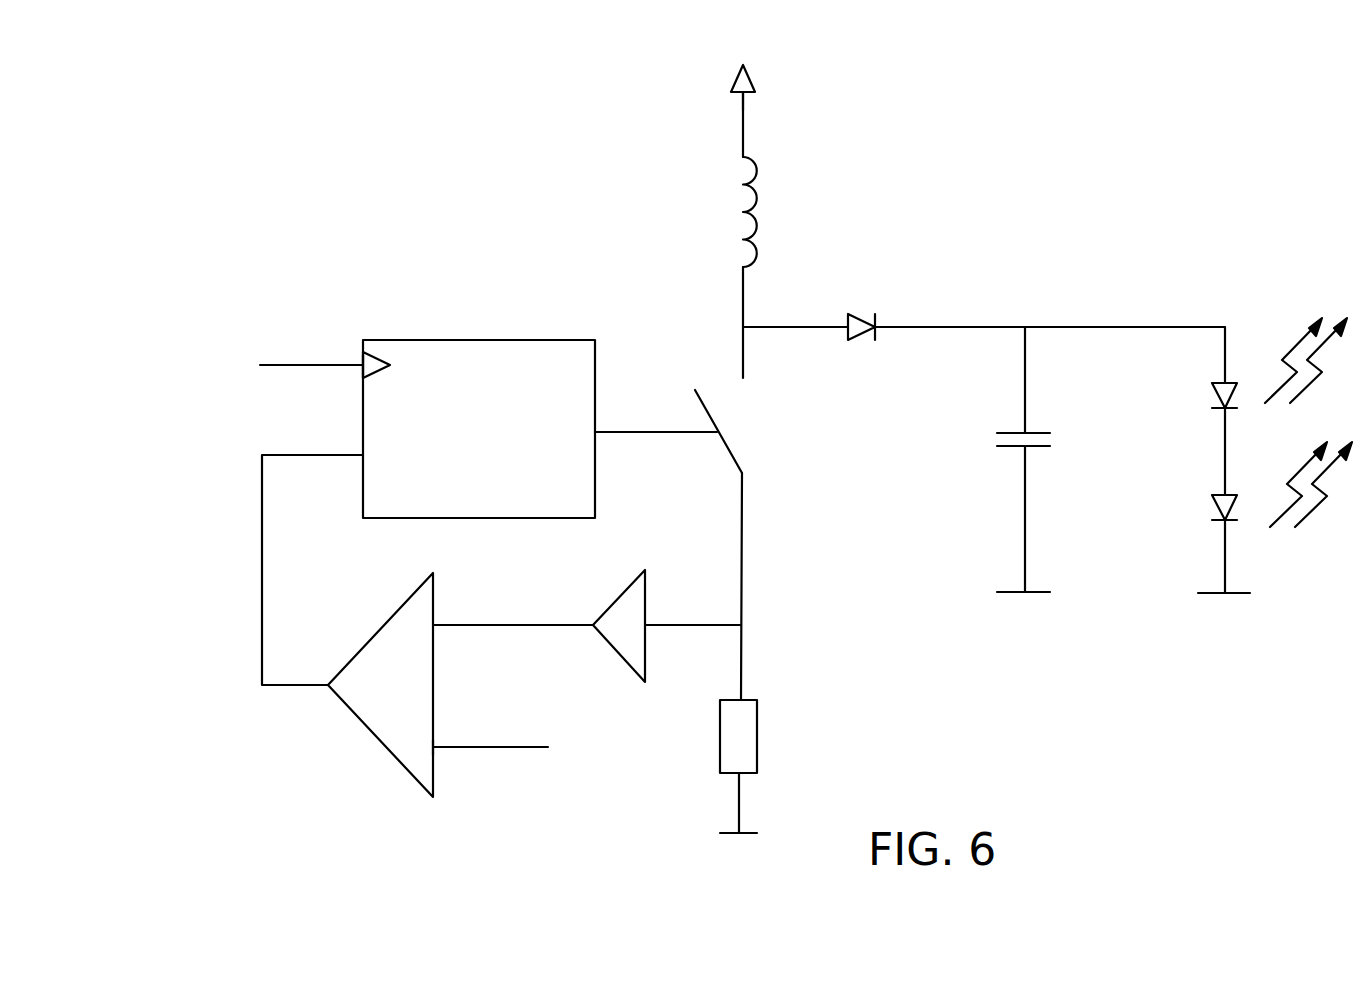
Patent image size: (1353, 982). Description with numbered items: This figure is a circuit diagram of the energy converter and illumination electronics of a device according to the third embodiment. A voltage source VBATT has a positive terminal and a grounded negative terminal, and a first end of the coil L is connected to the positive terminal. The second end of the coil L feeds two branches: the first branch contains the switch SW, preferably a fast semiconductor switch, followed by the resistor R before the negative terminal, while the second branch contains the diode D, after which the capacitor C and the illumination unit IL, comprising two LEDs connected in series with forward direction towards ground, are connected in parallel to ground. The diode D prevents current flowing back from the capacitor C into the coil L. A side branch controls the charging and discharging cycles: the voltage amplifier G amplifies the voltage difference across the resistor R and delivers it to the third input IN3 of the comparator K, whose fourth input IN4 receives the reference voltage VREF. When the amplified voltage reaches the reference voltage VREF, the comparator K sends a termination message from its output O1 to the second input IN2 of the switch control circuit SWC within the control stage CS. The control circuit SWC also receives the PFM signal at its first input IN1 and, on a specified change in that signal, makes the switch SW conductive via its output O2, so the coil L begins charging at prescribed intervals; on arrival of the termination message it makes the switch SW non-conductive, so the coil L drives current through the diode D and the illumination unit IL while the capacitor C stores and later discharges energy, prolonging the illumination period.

The control stage CS is at (479, 429).
The pulse frequency modulated signal PFM is at (276, 366).
The first input IN1 is at (363, 368).
The second input IN2 is at (363, 455).
The third input IN3 is at (433, 615).
The fourth input IN4 is at (433, 750).
The switch control circuit SWC is at (502, 340).
The comparator K is at (380, 685).
The voltage amplifier G is at (667, 626).
The comparator output O1 is at (328, 685).
The control circuit output O2 is at (595, 432).
The switch SW is at (697, 372).
The coil L is at (738, 221).
The voltage source VBATT is at (836, 106).
The diode D is at (984, 306).
The resistor R is at (760, 778).
The capacitor C is at (988, 440).
The illumination unit IL is at (1200, 418).
The reference voltage VREF is at (523, 756).